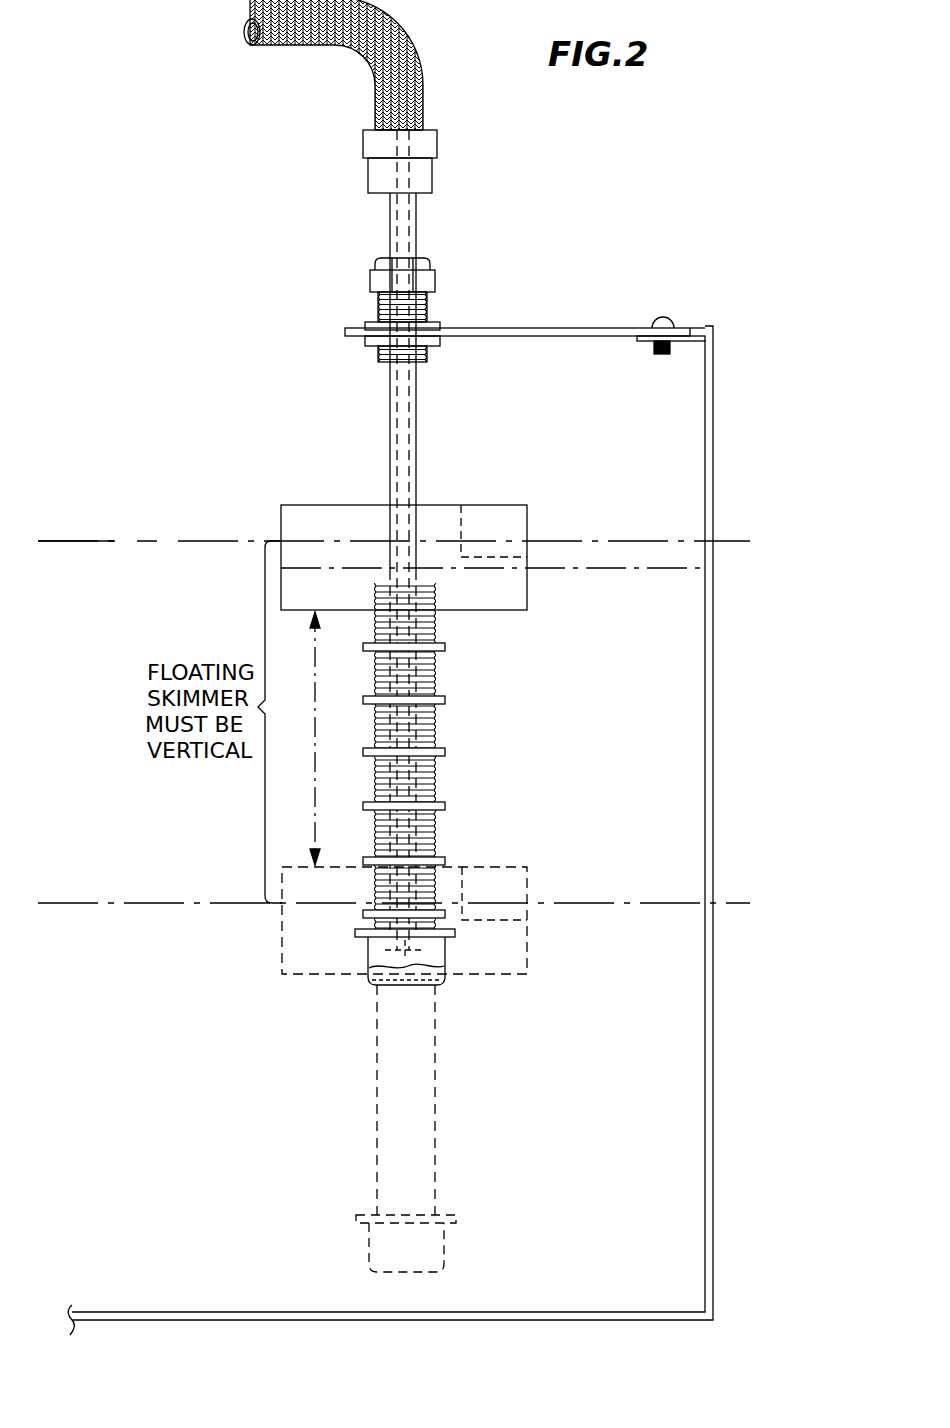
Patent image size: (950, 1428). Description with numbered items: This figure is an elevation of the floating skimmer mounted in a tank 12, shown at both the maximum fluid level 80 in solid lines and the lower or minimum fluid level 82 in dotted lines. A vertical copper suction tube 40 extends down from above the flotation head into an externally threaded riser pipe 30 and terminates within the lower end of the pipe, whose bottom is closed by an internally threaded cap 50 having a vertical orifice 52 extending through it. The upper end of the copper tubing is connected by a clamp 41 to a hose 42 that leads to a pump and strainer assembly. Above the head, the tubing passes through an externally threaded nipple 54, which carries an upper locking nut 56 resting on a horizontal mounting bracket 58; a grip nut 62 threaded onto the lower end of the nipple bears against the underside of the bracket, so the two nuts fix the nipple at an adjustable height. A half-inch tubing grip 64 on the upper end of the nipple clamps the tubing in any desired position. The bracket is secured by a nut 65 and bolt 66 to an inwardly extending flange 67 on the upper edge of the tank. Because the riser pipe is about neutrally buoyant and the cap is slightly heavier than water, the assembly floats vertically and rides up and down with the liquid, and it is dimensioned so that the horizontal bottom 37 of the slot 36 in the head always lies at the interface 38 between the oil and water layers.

The tank 12 is at (715, 1002).
The riser pipe 30 is at (438, 718).
The slot 36 is at (461, 526).
The horizontal bottom of the slot 37 is at (495, 556).
The interface 38 is at (585, 569).
The suction tube 40 is at (417, 222).
The clamp 41 is at (438, 145).
The hose 42 is at (290, 46).
The cap 50 is at (368, 978).
The orifice 52 is at (407, 986).
The nipple 54 is at (382, 362).
The upper locking nut 56 is at (365, 325).
The mounting bracket 58 is at (536, 328).
The grip nut 62 is at (365, 342).
The tubing grip 64 is at (436, 282).
The nut 65 is at (652, 346).
The bolt 66 is at (661, 318).
The flange 67 is at (688, 342).
The maximum fluid level 80 is at (112, 541).
The minimum fluid level 82 is at (112, 903).